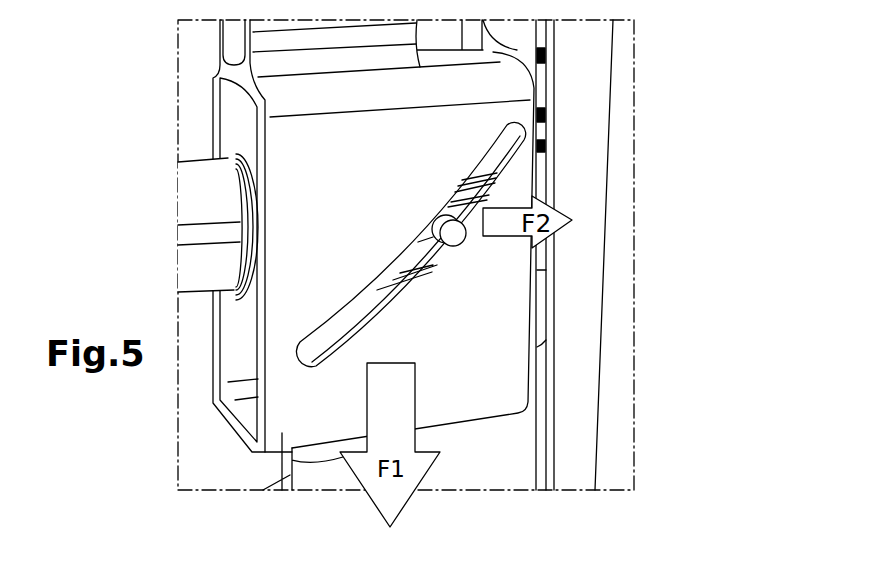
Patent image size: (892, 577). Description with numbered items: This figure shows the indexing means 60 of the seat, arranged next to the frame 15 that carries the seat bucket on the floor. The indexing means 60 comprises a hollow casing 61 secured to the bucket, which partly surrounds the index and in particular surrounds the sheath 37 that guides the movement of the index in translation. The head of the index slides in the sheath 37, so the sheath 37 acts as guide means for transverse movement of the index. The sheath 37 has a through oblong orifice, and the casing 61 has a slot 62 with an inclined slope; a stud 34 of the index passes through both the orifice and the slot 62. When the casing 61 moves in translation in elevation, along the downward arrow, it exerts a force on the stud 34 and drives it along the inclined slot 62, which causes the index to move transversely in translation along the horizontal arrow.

The frame 15 is at (588, 140).
The stud 34 is at (455, 235).
The sheath 37 is at (201, 175).
The indexing means 60 is at (196, 432).
The hollow casing 61 is at (280, 480).
The slot 62 is at (352, 320).